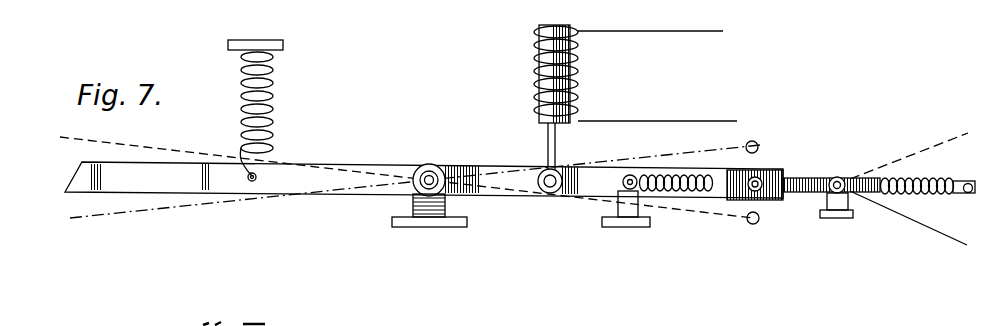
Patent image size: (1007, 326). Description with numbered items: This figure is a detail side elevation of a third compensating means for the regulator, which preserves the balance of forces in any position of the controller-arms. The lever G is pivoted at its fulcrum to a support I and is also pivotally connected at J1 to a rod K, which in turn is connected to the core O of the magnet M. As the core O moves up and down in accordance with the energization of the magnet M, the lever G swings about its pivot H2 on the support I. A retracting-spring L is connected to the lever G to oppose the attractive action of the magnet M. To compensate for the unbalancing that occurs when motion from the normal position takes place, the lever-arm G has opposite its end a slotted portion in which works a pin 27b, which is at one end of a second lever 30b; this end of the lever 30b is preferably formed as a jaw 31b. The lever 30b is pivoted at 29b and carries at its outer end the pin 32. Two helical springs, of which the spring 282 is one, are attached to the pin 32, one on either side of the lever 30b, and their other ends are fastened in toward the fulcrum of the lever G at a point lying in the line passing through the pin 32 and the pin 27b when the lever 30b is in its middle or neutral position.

The lever G is at (152, 173).
The retracting-spring L is at (240, 62).
The pivot H2 is at (458, 147).
The support I is at (501, 209).
The rod K is at (556, 138).
The pedestal J1 is at (548, 194).
The magnet M is at (535, 46).
The core O is at (548, 74).
The helical spring 282 is at (643, 175).
The pin 27b is at (738, 228).
The jaw 31b is at (808, 166).
The pivot 29b is at (830, 197).
The lever 30b is at (920, 203).
The pin 32 is at (968, 194).